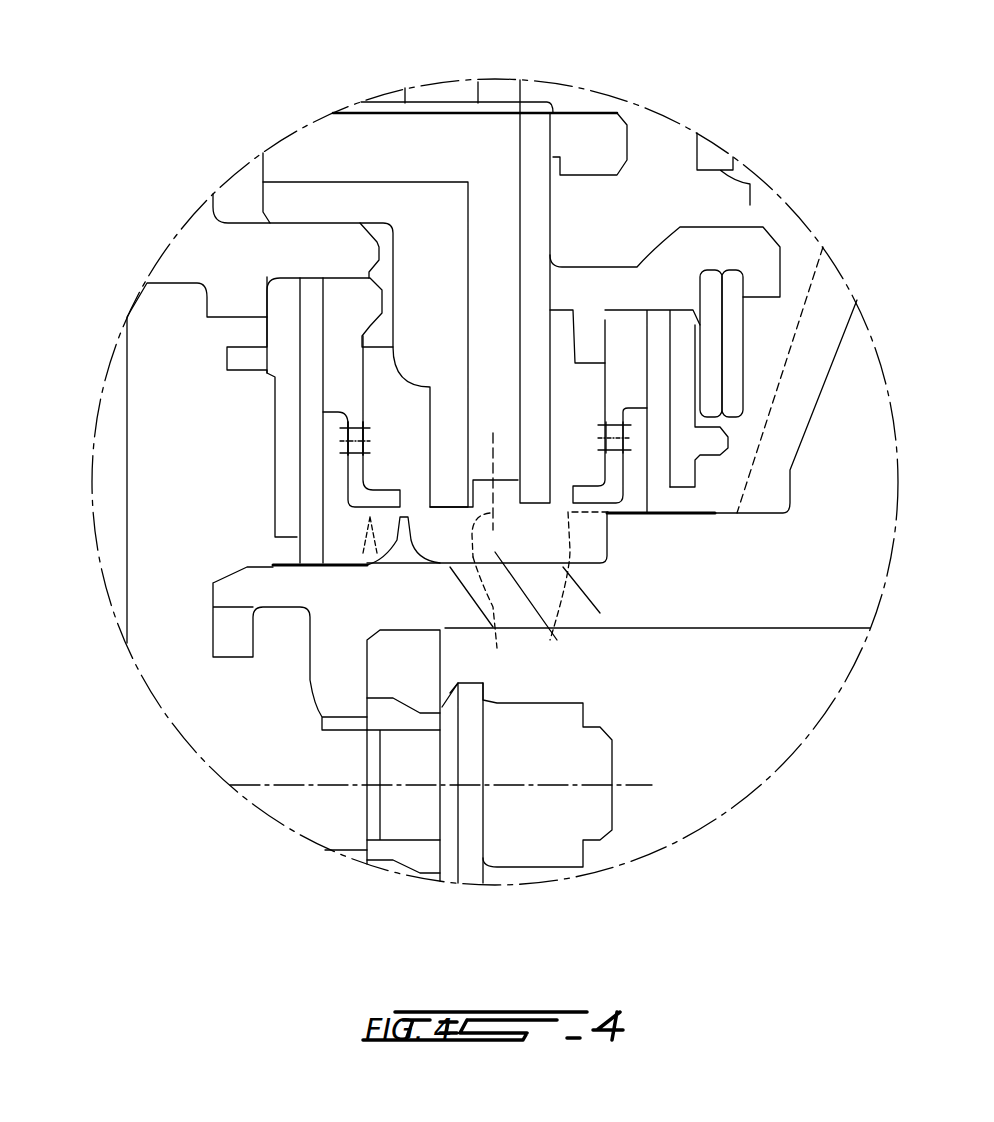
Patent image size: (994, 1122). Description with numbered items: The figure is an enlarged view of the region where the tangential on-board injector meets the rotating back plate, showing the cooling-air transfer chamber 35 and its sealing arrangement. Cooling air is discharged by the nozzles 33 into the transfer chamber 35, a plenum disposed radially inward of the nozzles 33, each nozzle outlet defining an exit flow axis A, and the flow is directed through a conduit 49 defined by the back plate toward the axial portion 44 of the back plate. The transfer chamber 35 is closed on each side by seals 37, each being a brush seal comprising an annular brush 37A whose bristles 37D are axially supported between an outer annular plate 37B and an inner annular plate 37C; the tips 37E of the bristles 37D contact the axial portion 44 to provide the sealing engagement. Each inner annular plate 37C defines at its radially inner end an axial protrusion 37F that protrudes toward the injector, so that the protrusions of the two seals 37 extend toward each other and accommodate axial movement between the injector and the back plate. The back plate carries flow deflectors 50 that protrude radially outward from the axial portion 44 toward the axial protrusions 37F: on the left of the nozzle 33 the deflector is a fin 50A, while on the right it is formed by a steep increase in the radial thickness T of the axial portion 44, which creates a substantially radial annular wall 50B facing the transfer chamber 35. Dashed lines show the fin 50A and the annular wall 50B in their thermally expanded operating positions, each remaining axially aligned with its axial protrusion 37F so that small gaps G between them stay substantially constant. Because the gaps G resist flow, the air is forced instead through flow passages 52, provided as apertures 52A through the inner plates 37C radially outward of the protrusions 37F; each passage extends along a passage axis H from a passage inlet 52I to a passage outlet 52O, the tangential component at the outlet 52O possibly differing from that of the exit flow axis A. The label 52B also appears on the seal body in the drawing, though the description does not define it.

The annular brush 37A is at (300, 397).
The bristles 37D is at (300, 397).
The outer annular plate 37B is at (287, 498).
The inner annular plate 37C is at (342, 338).
The tips 37E is at (287, 546).
The axial protrusions 37F is at (387, 496).
The flow passages 52 is at (362, 427).
The apertures 52A is at (613, 427).
The passage inlets 52I is at (380, 432).
The passage outlets 52O is at (330, 435).
The seal body 52B is at (362, 442).
The nozzles 33 is at (517, 478).
The transfer chamber 35 is at (540, 542).
The seals 37 is at (680, 423).
The axial portion 44 is at (835, 563).
The conduit 49 is at (577, 598).
The flow deflectors 50 is at (440, 555).
The fin 50A is at (385, 548).
The annular wall 50B is at (607, 538).
The gaps G is at (413, 504).
The passage axis H is at (606, 438).
The thickness T is at (760, 517).
The exit flow axis A is at (486, 619).